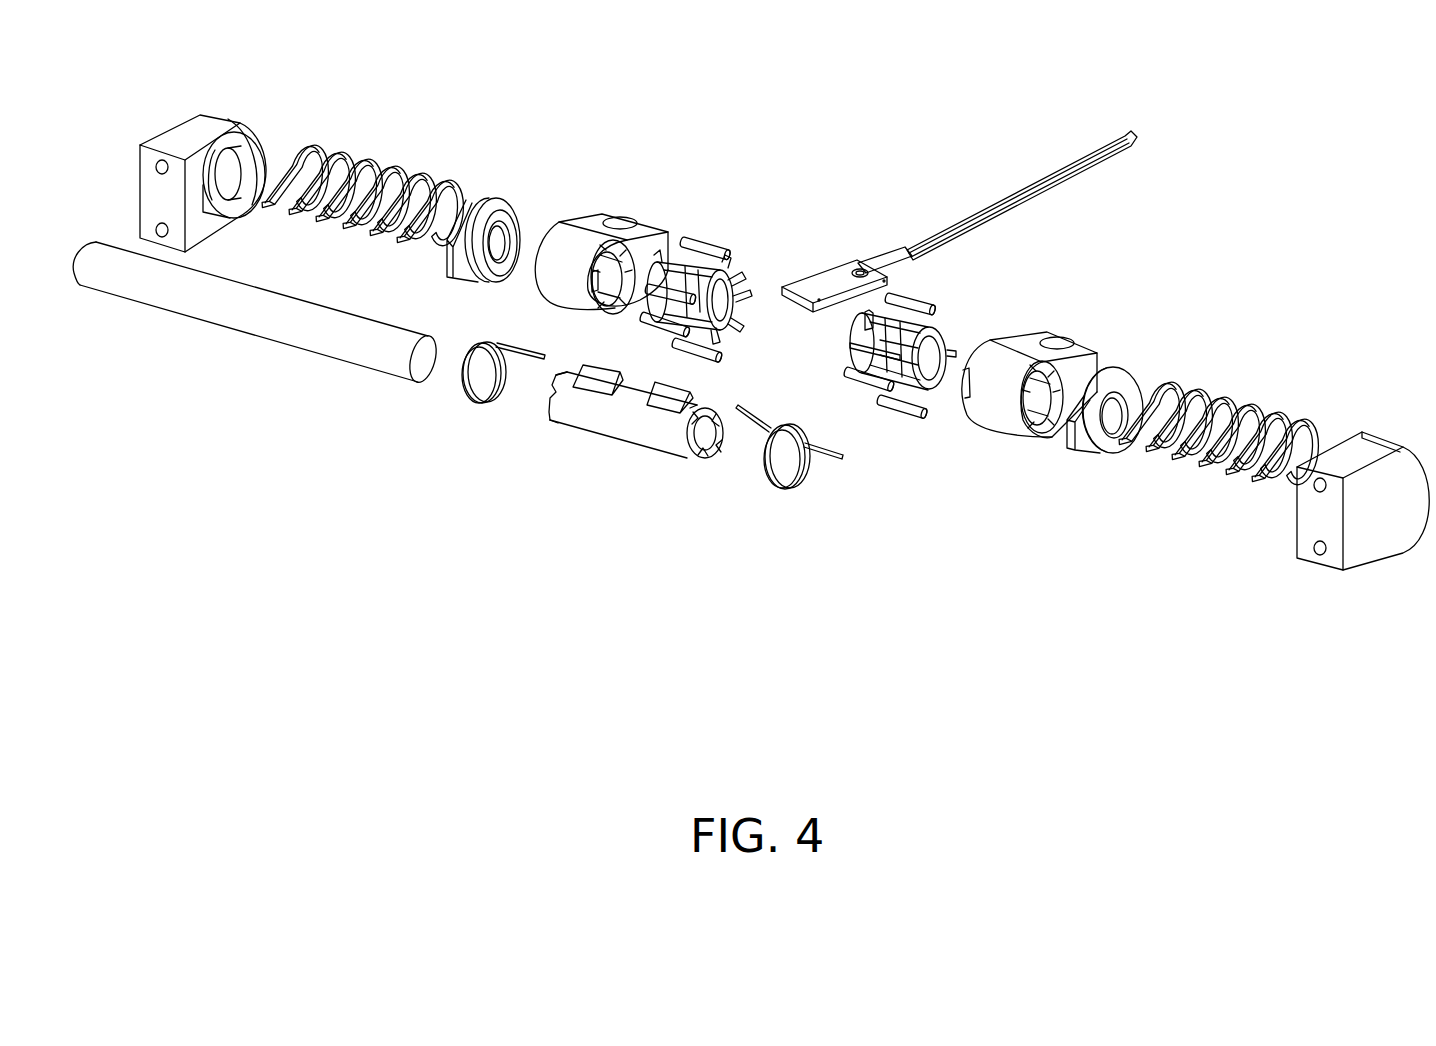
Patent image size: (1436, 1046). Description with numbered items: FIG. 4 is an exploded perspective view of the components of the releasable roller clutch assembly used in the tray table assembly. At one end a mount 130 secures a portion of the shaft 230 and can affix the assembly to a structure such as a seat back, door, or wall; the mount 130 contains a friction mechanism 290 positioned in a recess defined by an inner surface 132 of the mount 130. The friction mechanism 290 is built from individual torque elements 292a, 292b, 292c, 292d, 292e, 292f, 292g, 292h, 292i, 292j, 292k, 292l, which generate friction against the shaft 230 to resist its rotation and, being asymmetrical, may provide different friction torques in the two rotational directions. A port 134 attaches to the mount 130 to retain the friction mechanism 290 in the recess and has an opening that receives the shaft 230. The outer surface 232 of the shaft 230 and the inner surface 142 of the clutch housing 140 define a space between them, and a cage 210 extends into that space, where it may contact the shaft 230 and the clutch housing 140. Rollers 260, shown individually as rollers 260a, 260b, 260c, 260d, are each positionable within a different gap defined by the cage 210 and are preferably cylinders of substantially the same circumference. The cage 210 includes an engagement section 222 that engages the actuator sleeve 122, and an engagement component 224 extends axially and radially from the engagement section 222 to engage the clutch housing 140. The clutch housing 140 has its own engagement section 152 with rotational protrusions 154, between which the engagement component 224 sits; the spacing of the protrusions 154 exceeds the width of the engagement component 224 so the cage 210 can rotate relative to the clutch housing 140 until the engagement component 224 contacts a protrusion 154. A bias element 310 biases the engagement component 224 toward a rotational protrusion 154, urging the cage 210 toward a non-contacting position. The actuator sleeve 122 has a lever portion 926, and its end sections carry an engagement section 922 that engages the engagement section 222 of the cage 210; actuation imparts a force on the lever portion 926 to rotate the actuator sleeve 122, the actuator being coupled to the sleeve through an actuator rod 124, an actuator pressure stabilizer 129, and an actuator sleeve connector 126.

The actuator sleeve 122 is at (617, 440).
The actuator rod 124 is at (988, 200).
The actuator sleeve connector 126 is at (825, 277).
The actuator pressure stabilizer 129 is at (882, 257).
The mount 130 is at (784, 321).
The inner surface 132 is at (255, 153).
The port 134 is at (500, 202).
The clutch housing 140 is at (816, 328).
The inner surface 142 is at (608, 293).
The engagement section 152 is at (590, 290).
The rotational protrusions 154 is at (598, 260).
The cage 210 is at (889, 334).
The engagement section 222 is at (862, 330).
The engagement component 224 is at (853, 348).
The shaft 230 is at (257, 313).
The outer surface 232 is at (315, 335).
The rollers 260 is at (903, 412).
The roller 260a is at (692, 235).
The roller 260b is at (693, 283).
The roller 260c is at (660, 323).
The roller 260d is at (710, 358).
The friction mechanism 290 is at (789, 344).
The torque element 292a is at (1135, 448).
The torque element 292b is at (1163, 457).
The torque element 292c is at (1190, 462).
The torque element 292d is at (1215, 477).
The torque element 292e is at (1240, 480).
The torque element 292f is at (1304, 430).
The torque element 292g is at (280, 212).
The torque element 292h is at (308, 218).
The torque element 292i is at (332, 227).
The torque element 292j is at (365, 225).
The torque element 292k is at (388, 238).
The torque element 292l is at (458, 201).
The bias element 310 is at (465, 401).
The engagement section 922 is at (567, 426).
The lever portion 926 is at (600, 385).